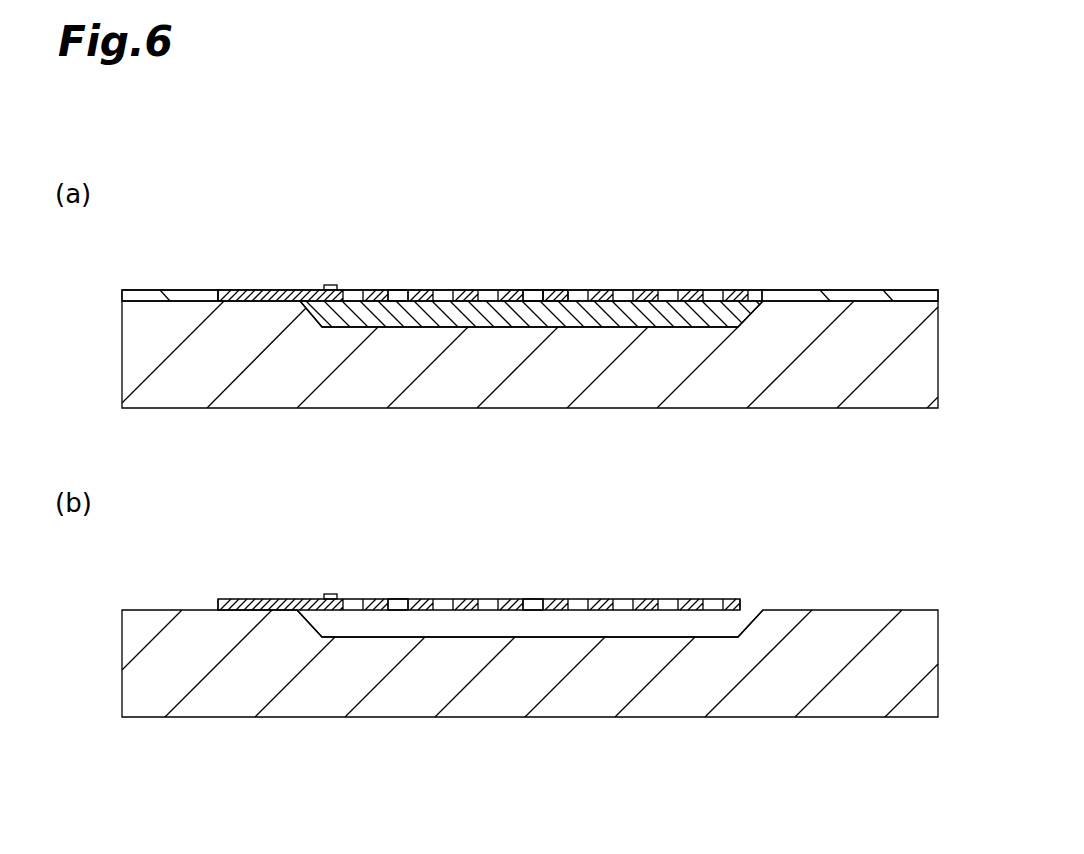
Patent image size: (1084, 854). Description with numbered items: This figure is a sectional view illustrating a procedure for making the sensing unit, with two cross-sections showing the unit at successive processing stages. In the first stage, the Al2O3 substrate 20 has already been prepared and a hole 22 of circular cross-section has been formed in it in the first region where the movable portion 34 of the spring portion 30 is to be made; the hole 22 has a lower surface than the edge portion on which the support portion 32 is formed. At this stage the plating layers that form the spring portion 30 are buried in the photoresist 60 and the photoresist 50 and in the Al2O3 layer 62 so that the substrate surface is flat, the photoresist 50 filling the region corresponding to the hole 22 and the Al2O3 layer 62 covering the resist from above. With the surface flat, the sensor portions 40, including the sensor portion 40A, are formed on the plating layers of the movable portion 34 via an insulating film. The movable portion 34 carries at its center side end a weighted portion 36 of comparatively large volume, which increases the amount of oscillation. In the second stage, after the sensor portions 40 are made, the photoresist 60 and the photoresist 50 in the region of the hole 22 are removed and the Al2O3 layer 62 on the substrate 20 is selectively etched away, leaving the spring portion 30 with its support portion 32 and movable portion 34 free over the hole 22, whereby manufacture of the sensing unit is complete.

The substrate 20 is at (782, 388).
The hole 22 is at (747, 290).
The spring portion 30 is at (469, 402).
The support portion 32 is at (268, 290).
The movable portion 34 is at (416, 290).
The weighted portion 36 is at (531, 290).
The sensor portion 40 is at (320, 406).
The sensor portion 40A is at (330, 285).
The photoresist 50 is at (615, 313).
The photoresist 60 is at (568, 290).
The Al2O3 layer 62 is at (852, 297).